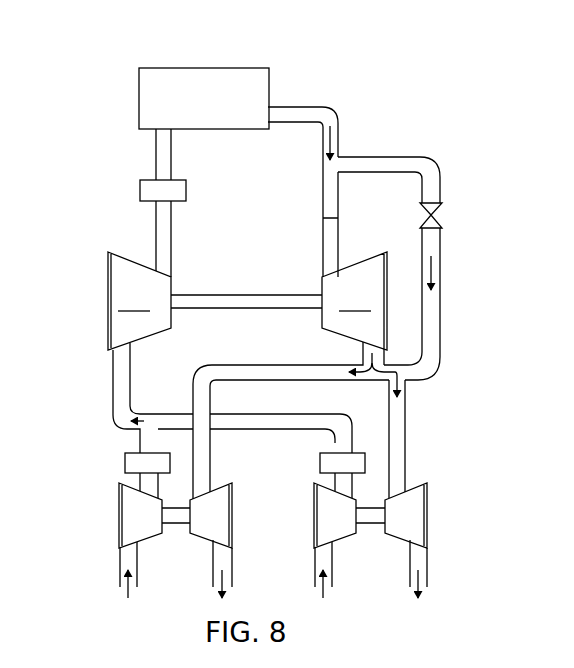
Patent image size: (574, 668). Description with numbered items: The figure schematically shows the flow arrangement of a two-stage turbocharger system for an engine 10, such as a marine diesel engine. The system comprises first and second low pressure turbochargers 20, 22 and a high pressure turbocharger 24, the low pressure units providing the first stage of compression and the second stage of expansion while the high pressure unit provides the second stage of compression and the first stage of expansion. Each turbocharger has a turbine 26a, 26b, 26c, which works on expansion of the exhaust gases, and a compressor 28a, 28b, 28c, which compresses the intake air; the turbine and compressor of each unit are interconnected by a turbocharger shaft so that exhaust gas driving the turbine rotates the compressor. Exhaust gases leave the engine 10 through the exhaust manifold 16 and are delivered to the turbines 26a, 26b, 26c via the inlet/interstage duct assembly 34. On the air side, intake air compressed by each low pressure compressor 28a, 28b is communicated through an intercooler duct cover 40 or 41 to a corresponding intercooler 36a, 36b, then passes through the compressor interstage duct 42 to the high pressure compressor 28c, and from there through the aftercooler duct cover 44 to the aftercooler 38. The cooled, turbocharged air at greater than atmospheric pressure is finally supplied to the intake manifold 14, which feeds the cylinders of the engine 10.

The engine 10 is at (210, 68).
The intake manifold 14 is at (172, 163).
The exhaust manifold 16 is at (290, 106).
The first low pressure turbocharger 20 is at (173, 524).
The second low pressure turbocharger 22 is at (369, 525).
The high pressure turbocharger 24 is at (221, 299).
The turbine 26a is at (230, 529).
The turbine 26b is at (420, 528).
The turbine 26c is at (354, 301).
The compressor 28a is at (122, 531).
The compressor 28b is at (320, 500).
The compressor 28c is at (139, 301).
The inlet/interstage duct assembly 34 is at (399, 133).
The intercooler 36a is at (128, 456).
The intercooler 36b is at (320, 463).
The aftercooler 38 is at (140, 192).
The intercooler duct cover 40 is at (152, 483).
The intercooler duct cover 41 is at (348, 483).
The compressor interstage duct 42 is at (265, 413).
The aftercooler duct cover 44 is at (172, 241).